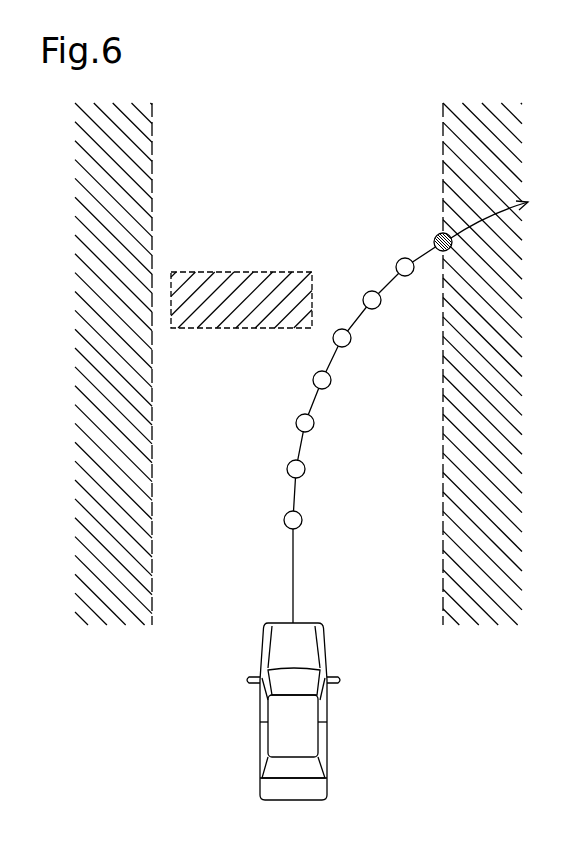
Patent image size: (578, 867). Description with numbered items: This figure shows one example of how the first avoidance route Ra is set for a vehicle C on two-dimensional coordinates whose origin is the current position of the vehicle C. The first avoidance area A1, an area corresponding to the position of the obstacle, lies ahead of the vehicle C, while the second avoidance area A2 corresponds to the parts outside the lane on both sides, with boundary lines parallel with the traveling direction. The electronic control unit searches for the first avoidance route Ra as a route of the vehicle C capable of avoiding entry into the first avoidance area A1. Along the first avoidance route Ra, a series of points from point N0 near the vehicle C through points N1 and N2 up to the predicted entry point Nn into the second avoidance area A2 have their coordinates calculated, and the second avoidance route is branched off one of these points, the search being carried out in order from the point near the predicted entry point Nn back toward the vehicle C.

The first avoidance area A1 is at (241, 300).
The second avoidance area A2 is at (298, 364).
The point on first avoidance route N0 is at (280, 511).
The point on first avoidance route N1 is at (283, 459).
The point on first avoidance route N2 is at (292, 413).
The predicted entry point Nn is at (434, 231).
The first avoidance route Ra is at (505, 214).
The vehicle C is at (260, 722).